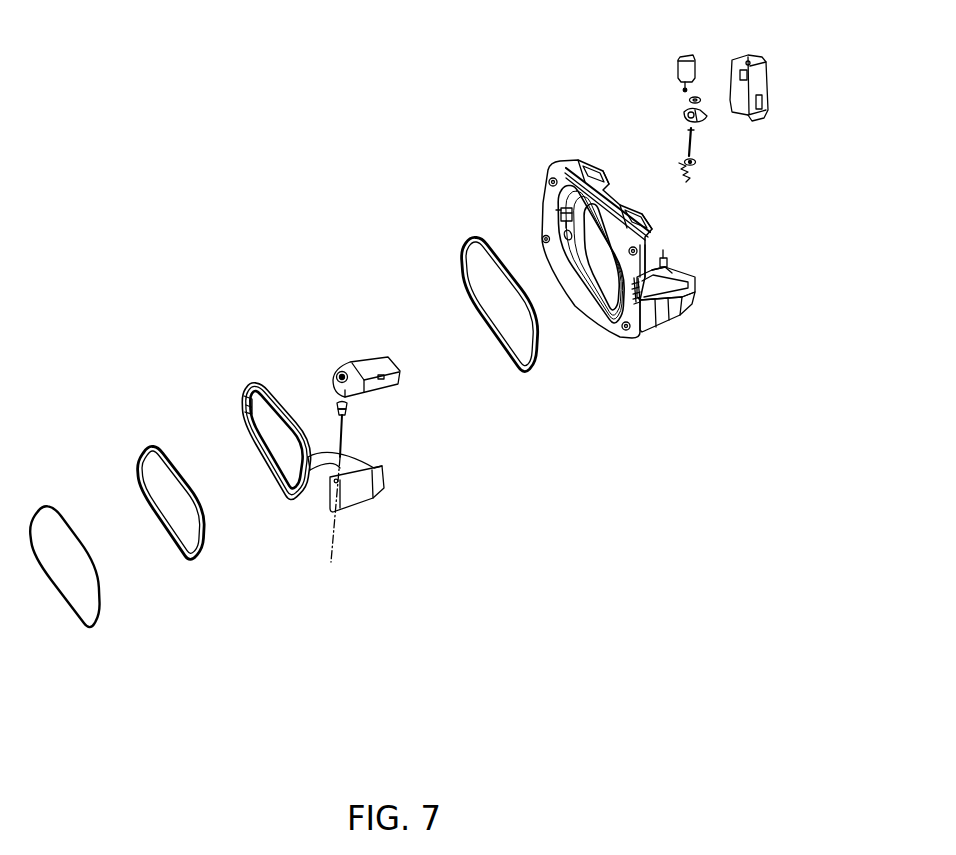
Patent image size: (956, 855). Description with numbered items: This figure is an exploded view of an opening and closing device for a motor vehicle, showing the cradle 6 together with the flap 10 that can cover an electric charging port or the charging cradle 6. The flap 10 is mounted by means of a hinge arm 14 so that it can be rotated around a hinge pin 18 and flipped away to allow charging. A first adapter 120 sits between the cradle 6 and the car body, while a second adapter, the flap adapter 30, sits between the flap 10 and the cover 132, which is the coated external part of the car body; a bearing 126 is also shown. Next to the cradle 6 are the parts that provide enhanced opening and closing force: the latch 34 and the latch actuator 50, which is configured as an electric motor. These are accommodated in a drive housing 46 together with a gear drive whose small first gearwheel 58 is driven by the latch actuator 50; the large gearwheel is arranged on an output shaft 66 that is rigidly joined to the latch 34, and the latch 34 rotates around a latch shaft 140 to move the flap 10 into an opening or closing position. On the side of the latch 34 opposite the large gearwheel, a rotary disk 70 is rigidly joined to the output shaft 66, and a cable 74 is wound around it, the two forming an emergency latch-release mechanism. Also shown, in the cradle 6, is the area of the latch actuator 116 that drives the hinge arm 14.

The flap 10 is at (163, 386).
The cradle 6 is at (560, 173).
The hinge arm 14 is at (353, 495).
The hinge pin 18 is at (345, 428).
The flap adapter 30 is at (202, 542).
The latch 34 is at (703, 118).
The drive housing 46 is at (763, 72).
The latch actuator 50 is at (680, 62).
The first gearwheel 58 is at (683, 90).
The output shaft 66 is at (697, 97).
The rotary disk 70 is at (697, 165).
The cable 74 is at (690, 177).
The area of the latch actuator 116 is at (665, 308).
The first adapter 120 is at (540, 363).
The bearing 126 is at (367, 368).
The cover 132 is at (77, 607).
The latch shaft 140 is at (688, 137).